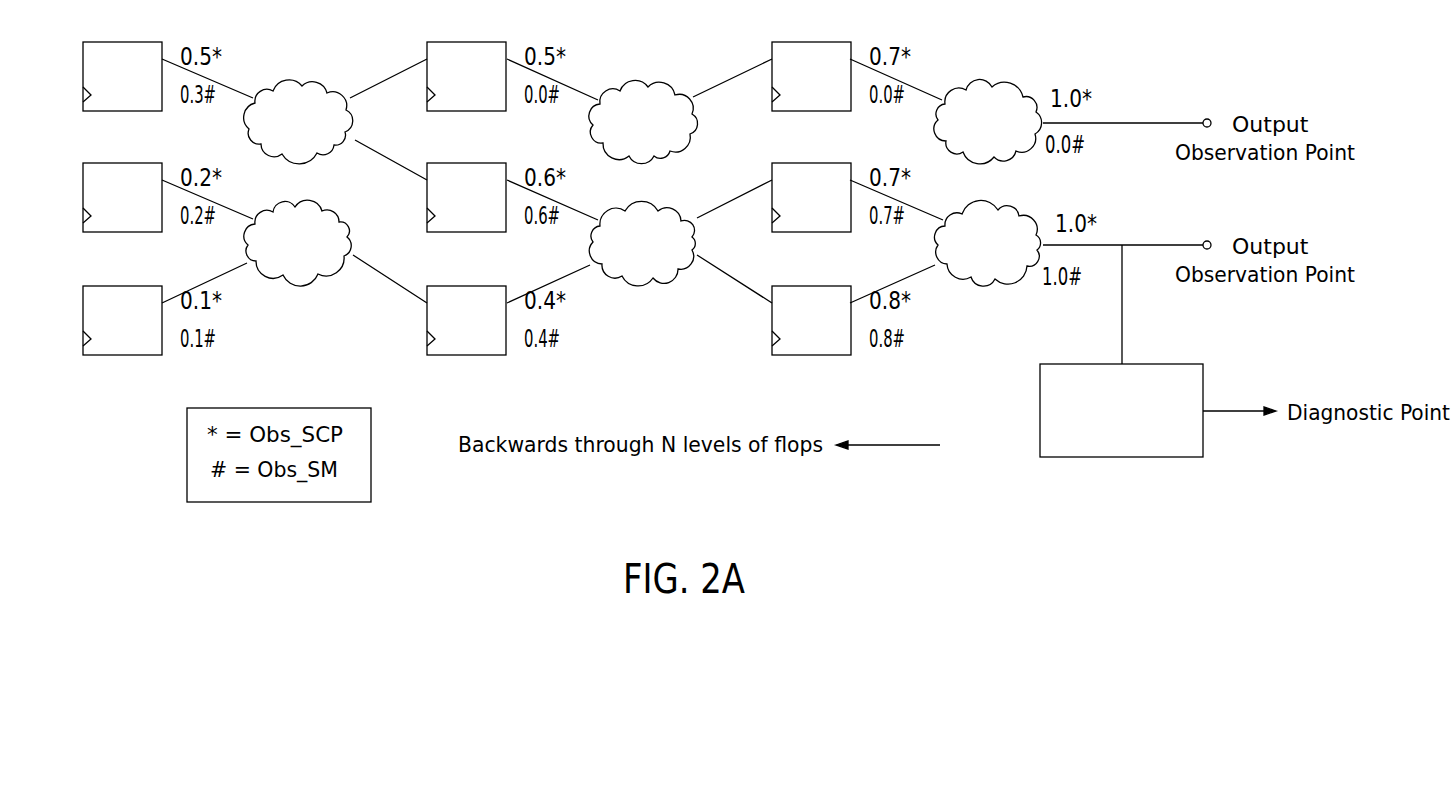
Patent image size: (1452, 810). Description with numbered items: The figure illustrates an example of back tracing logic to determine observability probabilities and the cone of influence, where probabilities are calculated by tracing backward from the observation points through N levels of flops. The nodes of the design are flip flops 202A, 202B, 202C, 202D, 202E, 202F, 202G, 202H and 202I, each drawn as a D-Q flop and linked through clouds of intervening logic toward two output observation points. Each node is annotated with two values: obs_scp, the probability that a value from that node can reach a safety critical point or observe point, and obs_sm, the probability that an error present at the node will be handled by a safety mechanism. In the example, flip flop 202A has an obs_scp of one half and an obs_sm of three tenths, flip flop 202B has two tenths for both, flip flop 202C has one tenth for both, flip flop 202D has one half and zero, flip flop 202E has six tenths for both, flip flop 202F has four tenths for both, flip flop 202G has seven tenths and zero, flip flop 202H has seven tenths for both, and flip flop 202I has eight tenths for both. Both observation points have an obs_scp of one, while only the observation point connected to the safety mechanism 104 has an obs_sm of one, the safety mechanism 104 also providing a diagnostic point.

The flip flop 202A is at (158, 106).
The flip flop 202B is at (158, 227).
The flip flop 202C is at (158, 350).
The flip flop 202D is at (502, 106).
The flip flop 202E is at (502, 227).
The flip flop 202F is at (502, 350).
The flip flop 202G is at (847, 106).
The flip flop 202H is at (847, 227).
The flip flop 202I is at (845, 350).
The safety mechanism 104 is at (1082, 457).